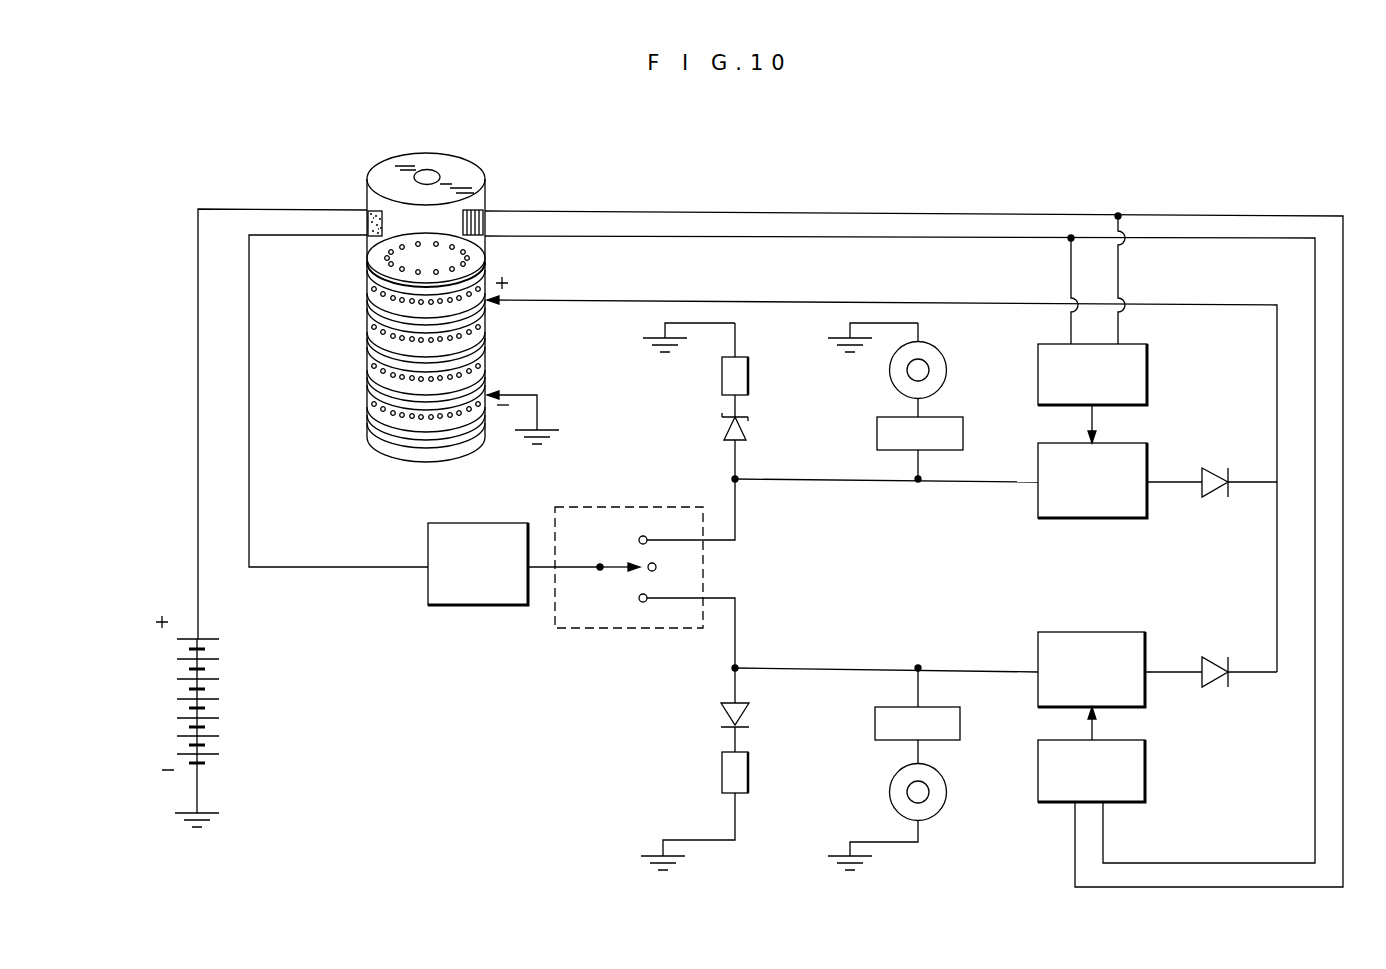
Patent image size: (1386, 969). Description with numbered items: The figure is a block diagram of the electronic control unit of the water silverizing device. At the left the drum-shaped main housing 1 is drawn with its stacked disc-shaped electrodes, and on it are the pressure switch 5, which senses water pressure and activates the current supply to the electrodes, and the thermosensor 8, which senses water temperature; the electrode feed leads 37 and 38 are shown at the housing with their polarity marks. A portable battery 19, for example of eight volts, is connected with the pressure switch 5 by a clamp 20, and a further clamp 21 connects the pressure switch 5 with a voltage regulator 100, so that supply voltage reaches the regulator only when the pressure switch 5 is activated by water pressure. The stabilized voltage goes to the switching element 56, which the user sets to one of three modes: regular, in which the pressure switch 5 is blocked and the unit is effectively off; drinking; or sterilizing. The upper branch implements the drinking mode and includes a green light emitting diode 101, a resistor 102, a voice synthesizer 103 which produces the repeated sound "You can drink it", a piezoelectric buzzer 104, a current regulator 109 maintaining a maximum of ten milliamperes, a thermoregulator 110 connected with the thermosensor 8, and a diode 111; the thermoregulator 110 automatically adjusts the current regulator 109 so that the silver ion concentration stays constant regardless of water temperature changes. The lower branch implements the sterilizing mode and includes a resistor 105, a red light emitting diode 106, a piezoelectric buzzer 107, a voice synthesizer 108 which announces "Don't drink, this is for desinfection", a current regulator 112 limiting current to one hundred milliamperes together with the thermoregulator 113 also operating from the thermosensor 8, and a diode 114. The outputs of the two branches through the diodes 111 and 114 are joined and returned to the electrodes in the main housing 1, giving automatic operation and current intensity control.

The main housing 1 is at (365, 360).
The pressure switch 5 is at (368, 220).
The thermosensor 8 is at (480, 212).
The battery 19 is at (215, 690).
The clamp 20 is at (232, 208).
The clamp 21 is at (252, 315).
The positive terminal lead 37 is at (882, 474).
The negative terminal lead 38 is at (523, 405).
The switching element 56 is at (608, 628).
The voltage regulator 100 is at (442, 605).
The green light emitting diode 101 is at (722, 420).
The resistor 102 is at (750, 366).
The voice synthesizer 103 is at (877, 416).
The piezoelectric buzzer 104 is at (890, 358).
The resistor 105 is at (720, 768).
The red light emitting diode 106 is at (720, 710).
The piezoelectric buzzer 107 is at (890, 780).
The voice synthesizer 108 is at (872, 715).
The current regulator 109 is at (1128, 518).
The thermoregulator 110 is at (1150, 380).
The diode 111 is at (1205, 495).
The current regulator 112 is at (1055, 632).
The thermoregulator 113 is at (1147, 762).
The diode 114 is at (1212, 655).